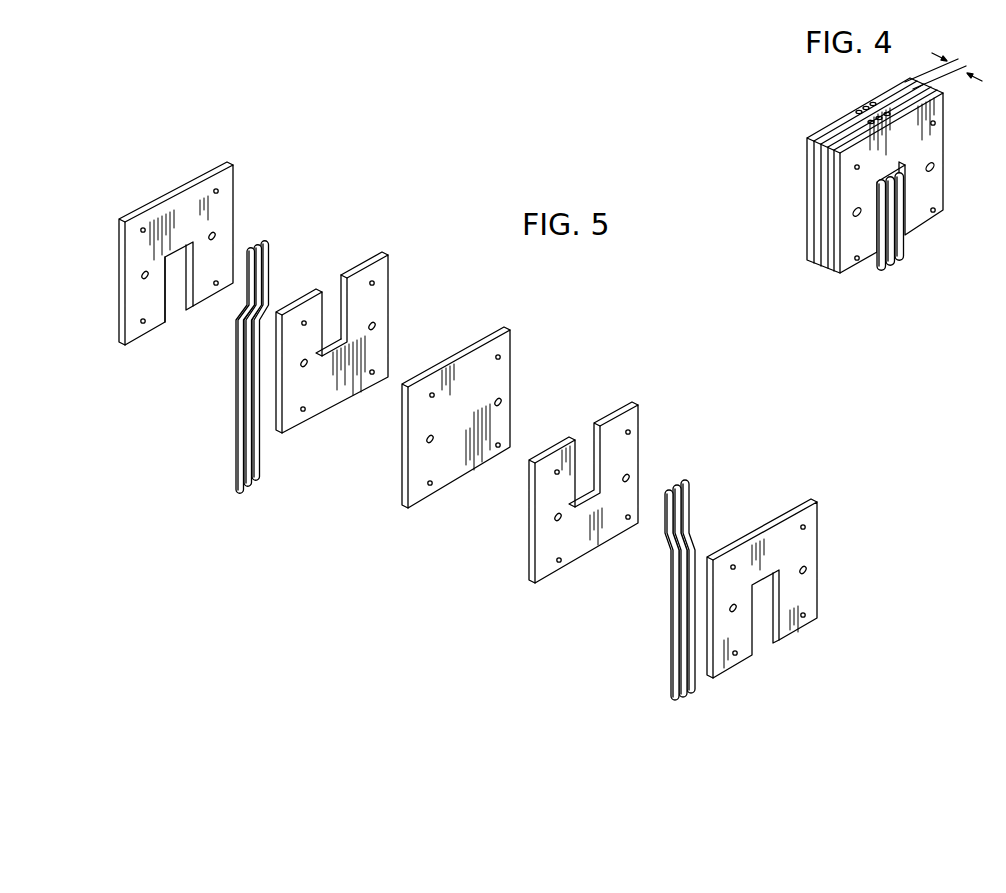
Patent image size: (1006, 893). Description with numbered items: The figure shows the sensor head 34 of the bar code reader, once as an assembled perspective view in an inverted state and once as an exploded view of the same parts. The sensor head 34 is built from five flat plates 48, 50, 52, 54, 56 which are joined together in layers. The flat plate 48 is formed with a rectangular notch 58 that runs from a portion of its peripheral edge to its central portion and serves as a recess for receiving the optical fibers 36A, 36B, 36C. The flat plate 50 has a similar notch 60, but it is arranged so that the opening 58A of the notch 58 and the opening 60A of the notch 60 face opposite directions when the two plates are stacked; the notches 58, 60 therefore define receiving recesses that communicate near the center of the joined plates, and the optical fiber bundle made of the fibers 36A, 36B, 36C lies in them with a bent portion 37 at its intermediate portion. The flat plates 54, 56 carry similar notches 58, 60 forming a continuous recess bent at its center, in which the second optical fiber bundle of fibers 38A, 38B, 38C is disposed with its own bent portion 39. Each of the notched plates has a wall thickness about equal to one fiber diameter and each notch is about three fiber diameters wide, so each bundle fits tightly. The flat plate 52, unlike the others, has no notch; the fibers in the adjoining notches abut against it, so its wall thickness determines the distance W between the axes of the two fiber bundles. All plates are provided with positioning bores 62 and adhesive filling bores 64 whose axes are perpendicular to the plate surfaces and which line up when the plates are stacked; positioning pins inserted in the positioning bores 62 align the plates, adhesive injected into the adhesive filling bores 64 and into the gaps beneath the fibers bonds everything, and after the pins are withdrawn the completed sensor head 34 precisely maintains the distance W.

In FIG. 4, the sensor head 34 is at (948, 146).
In FIG. 5, the optical fiber 36A is at (270, 267).
In FIG. 5, the optical fiber 36B is at (258, 252).
In FIG. 5, the optical fiber 36C is at (240, 385).
In FIG. 5, the bent portion 37 is at (248, 356).
In FIG. 4, the optical fiber 38A is at (903, 251).
In FIG. 5, the optical fiber 38A is at (686, 484).
In FIG. 4, the optical fiber 38B is at (888, 268).
In FIG. 5, the optical fiber 38B is at (679, 509).
In FIG. 4, the optical fiber 38C is at (878, 268).
In FIG. 5, the optical fiber 38C is at (667, 535).
In FIG. 5, the bent portion 39 is at (677, 580).
In FIG. 5, the flat plate 48 is at (228, 204).
In FIG. 5, the flat plate 50 is at (383, 315).
In FIG. 5, the flat plate 52 is at (505, 368).
In FIG. 5, the flat plate 54 is at (540, 518).
In FIG. 5, the flat plate 56 is at (811, 534).
In FIG. 5, the rectangular notch 58 is at (187, 257).
In FIG. 5, the opening 58A is at (178, 300).
In FIG. 5, the notch 60 is at (346, 314).
In FIG. 5, the opening 60A is at (336, 293).
In FIG. 4, the positioning bores 62 is at (893, 189).
In FIG. 5, the positioning bores 62 is at (213, 236).
In FIG. 4, the adhesive filling bores 64 is at (895, 190).
In FIG. 5, the adhesive filling bores 64 is at (142, 229).
In FIG. 4, the distance W is at (962, 67).